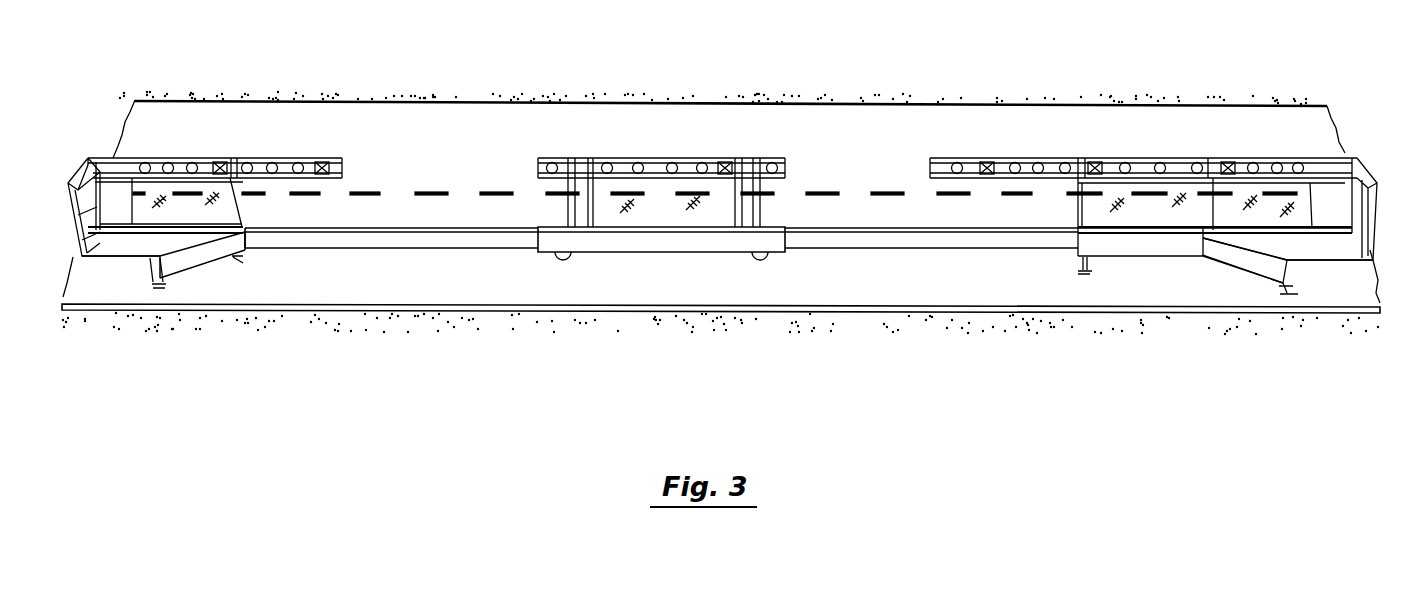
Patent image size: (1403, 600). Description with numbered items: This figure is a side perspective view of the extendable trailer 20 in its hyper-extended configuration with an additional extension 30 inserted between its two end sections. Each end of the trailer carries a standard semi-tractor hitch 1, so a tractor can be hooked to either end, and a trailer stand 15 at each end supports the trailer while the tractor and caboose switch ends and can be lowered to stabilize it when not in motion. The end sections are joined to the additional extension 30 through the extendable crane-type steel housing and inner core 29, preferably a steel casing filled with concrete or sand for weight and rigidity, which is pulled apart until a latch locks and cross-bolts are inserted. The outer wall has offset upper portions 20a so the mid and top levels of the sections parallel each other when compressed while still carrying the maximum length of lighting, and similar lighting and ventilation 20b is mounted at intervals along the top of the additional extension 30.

The semi-tractor hitch 1 is at (128, 272).
The trailer stand 15 is at (192, 280).
The extendable trailer 20 is at (160, 150).
The offset upper portion of outer wall 20a is at (288, 150).
The lighting and ventilation 20b is at (652, 150).
The extendable inner core 29 is at (391, 250).
The additional extension 30 is at (642, 256).